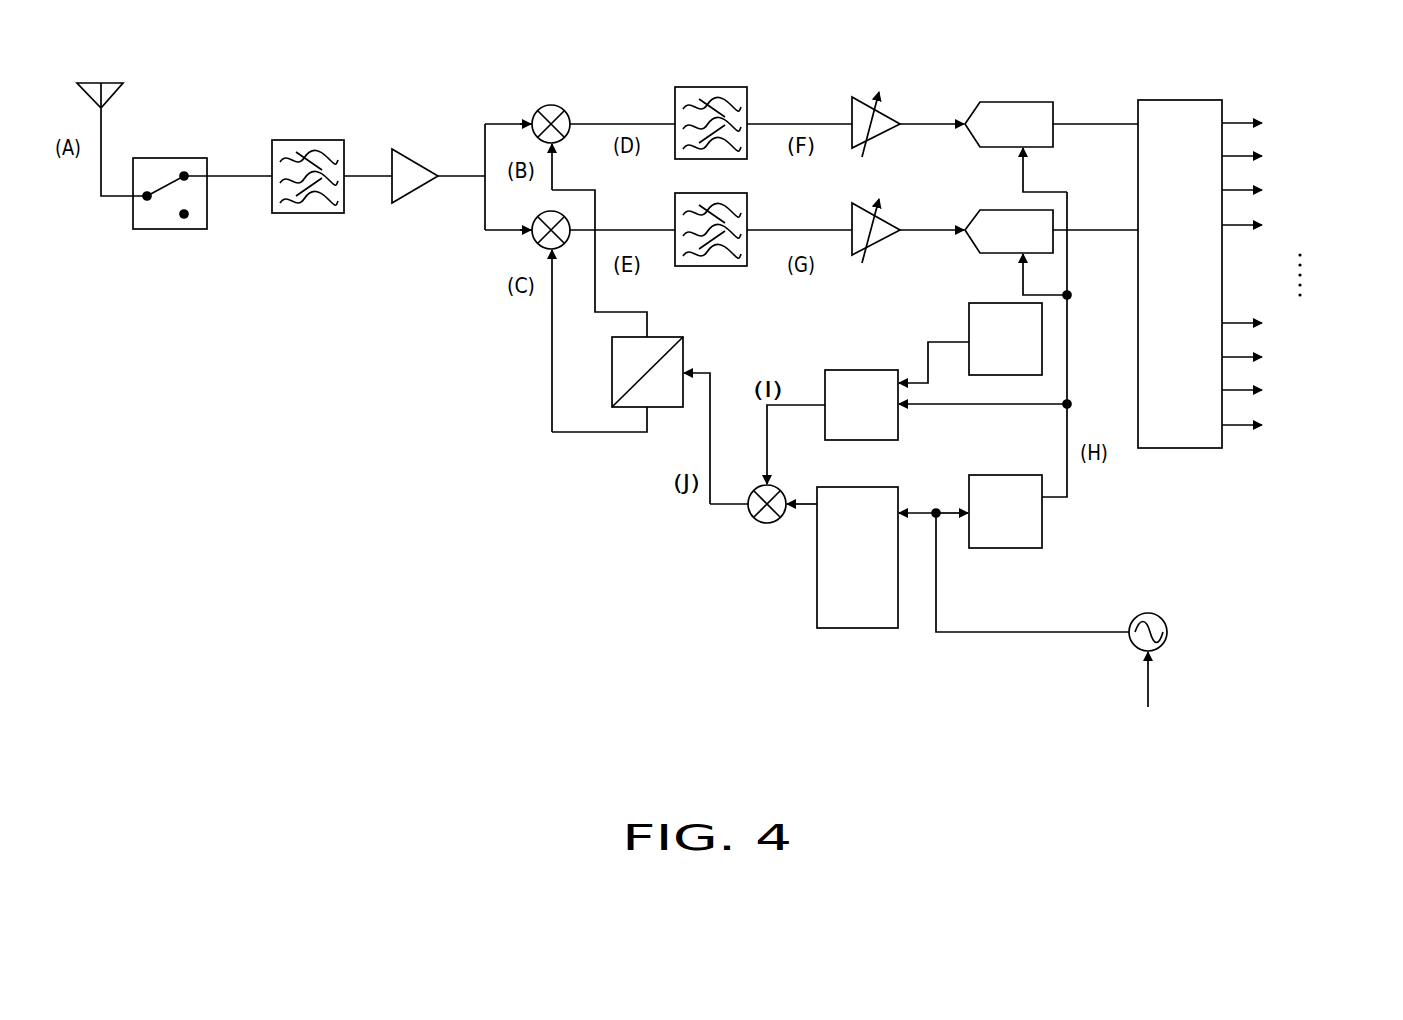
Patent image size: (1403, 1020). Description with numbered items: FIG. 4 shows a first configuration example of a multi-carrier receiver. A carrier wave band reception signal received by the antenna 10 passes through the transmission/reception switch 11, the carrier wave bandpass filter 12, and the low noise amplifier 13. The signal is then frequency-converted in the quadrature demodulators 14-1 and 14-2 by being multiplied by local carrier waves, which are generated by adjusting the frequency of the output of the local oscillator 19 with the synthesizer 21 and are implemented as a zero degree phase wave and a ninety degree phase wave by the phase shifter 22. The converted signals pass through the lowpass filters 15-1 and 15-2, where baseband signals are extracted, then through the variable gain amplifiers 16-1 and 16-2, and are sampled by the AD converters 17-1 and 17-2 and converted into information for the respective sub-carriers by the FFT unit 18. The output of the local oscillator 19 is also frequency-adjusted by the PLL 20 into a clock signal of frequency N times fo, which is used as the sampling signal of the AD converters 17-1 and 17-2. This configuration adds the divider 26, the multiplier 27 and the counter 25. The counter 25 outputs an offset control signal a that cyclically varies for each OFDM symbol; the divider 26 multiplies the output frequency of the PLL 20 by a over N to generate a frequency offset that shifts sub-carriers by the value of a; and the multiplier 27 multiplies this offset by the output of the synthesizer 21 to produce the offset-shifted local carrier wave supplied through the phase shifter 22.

The antenna 10 is at (101, 128).
The transmission/reception switch 11 is at (192, 229).
The carrier wave bandpass filter 12 is at (333, 140).
The low noise amplifier 13 is at (418, 190).
The quadrature demodulator 14-1 is at (573, 117).
The quadrature demodulator 14-2 is at (537, 238).
The lowpass filter 15-1 is at (740, 87).
The lowpass filter 15-2 is at (748, 217).
The variable gain amplifier 16-1 is at (880, 135).
The variable gain amplifier 16-2 is at (880, 238).
The AD converter 17-1 is at (1013, 102).
The AD converter 17-2 is at (1000, 210).
The FFT unit 18 is at (1217, 100).
The local oscillator 19 is at (1167, 628).
The PLL 20 is at (1042, 525).
The synthesizer 21 is at (862, 628).
The phase shifter 22 is at (683, 352).
The counter 25 is at (969, 313).
The divider 26 is at (898, 418).
The multiplier 27 is at (750, 515).